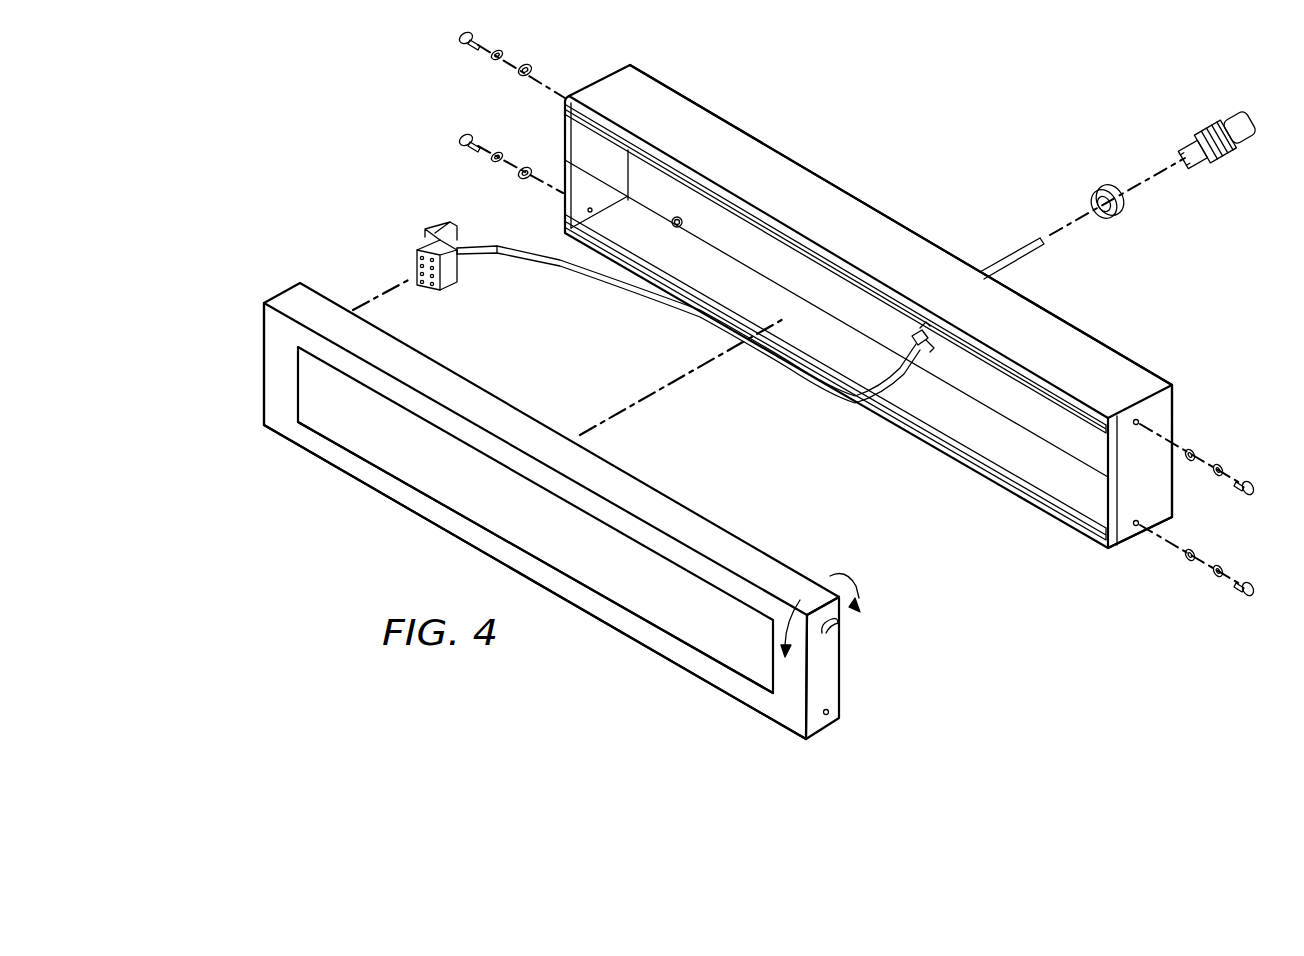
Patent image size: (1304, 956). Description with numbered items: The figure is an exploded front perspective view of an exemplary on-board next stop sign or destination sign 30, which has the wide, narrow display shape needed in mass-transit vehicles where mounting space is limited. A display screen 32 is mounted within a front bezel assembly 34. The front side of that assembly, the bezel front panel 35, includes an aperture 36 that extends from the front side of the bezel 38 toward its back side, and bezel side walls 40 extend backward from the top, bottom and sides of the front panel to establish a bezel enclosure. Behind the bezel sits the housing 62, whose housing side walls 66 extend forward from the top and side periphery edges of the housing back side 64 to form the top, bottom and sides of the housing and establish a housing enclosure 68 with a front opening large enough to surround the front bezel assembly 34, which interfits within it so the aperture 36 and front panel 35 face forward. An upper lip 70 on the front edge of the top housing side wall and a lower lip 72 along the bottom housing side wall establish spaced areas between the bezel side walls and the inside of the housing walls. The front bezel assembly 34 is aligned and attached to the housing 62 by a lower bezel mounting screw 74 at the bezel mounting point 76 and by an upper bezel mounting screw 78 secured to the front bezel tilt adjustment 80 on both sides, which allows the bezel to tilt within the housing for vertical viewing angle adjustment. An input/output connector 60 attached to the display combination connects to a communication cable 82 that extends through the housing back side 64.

The destination sign 30 is at (332, 110).
The display screen 32 is at (387, 455).
The front bezel assembly 34 is at (280, 292).
The bezel front panel 35 is at (275, 372).
The aperture 36 is at (698, 653).
The bezel 38 is at (804, 740).
The bezel side walls 40 is at (718, 528).
The input/output connector 60 is at (422, 242).
The housing 62 is at (627, 67).
The housing back side 64 is at (807, 164).
The housing side walls 66 is at (915, 247).
The housing enclosure 68 is at (950, 425).
The upper lip 70 is at (1045, 398).
The lower lip 72 is at (1040, 495).
The lower bezel mounting screw 74 is at (1228, 582).
The bezel mounting point 76 is at (830, 720).
The upper bezel mounting screw 78 is at (1240, 480).
The front bezel tilt adjustment 80 is at (843, 632).
The communication cable 82 is at (554, 270).